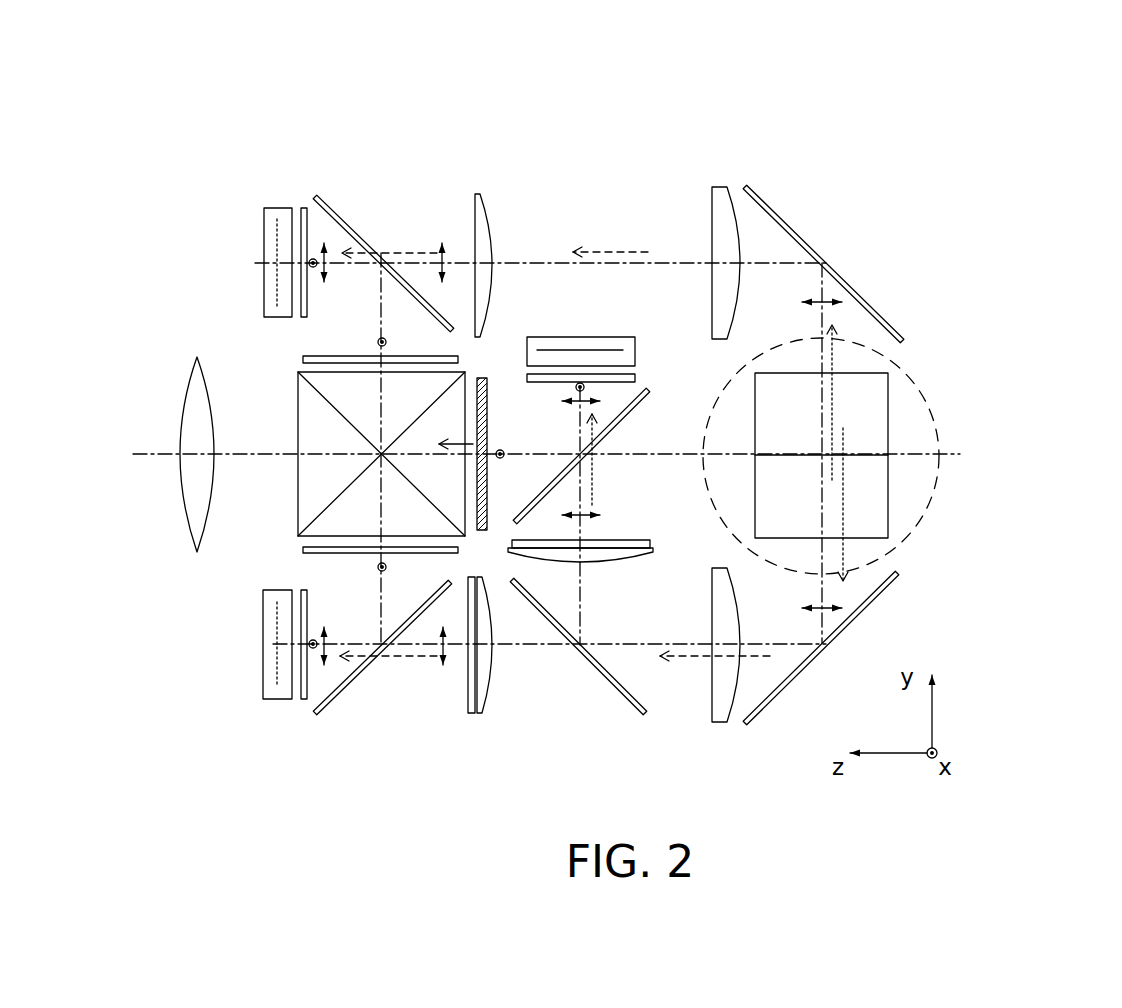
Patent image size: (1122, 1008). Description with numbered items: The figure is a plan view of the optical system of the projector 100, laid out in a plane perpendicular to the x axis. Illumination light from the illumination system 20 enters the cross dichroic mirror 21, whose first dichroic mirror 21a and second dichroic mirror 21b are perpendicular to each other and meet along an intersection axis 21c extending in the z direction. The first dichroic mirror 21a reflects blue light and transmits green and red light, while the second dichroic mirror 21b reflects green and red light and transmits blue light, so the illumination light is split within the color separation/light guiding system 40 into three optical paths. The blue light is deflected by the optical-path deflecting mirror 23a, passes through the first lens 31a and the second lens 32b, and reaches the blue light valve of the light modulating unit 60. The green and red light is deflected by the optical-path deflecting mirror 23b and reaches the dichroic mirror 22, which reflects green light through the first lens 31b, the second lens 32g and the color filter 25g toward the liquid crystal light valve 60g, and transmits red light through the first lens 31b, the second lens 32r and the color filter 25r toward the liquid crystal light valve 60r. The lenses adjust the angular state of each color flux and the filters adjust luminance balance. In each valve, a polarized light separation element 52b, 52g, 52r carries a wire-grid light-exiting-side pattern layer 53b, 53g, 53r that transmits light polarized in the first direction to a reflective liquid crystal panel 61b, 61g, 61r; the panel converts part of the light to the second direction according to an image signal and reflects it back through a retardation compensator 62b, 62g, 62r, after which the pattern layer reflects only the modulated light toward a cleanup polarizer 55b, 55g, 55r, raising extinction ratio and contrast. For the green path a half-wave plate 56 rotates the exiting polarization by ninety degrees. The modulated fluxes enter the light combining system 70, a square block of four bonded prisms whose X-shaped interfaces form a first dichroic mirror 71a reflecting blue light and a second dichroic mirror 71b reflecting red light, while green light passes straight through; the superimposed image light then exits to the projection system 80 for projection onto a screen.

The projector 100 is at (953, 72).
The illumination system 20 is at (964, 463).
The cross dichroic mirror 21 is at (928, 441).
The first dichroic mirror 21a is at (877, 498).
The second dichroic mirror 21b is at (877, 422).
The intersection axis 21c is at (917, 455).
The dichroic mirror 22 is at (615, 690).
The optical-path deflecting mirror 23a is at (810, 246).
The optical-path deflecting mirror 23b is at (790, 682).
The color filter 25g is at (652, 540).
The color filter 25r is at (470, 715).
The first lens 31a is at (720, 189).
The first lens 31b is at (723, 725).
The second lens 32b is at (482, 193).
The second lens 32g is at (650, 548).
The second lens 32r is at (480, 715).
The color separation/light guiding system 40 is at (913, 226).
The polarized light separation element 52b is at (326, 199).
The polarized light separation element 52g is at (642, 398).
The polarized light separation element 52r is at (343, 692).
The light-exiting-side pattern layer 53b is at (407, 358).
The light-exiting-side pattern layer 53g is at (647, 385).
The light-exiting-side pattern layer 53r is at (317, 707).
The cleanup polarizer 55b is at (413, 353).
The cleanup polarizer 55g is at (483, 515).
The cleanup polarizer 55r is at (427, 552).
The half-wave plate 56 is at (480, 532).
The light modulating unit 60 is at (322, 182).
The liquid crystal light valve 60g is at (650, 373).
The liquid crystal light valve 60r is at (340, 763).
The liquid crystal panel 61b is at (270, 318).
The liquid crystal panel 61g is at (590, 337).
The liquid crystal panel 61r is at (270, 590).
The retardation compensator 62b is at (302, 318).
The retardation compensator 62g is at (548, 373).
The retardation compensator 62r is at (302, 590).
The light combining system 70 is at (291, 442).
The first dichroic mirror 71a is at (403, 432).
The second dichroic mirror 71b is at (395, 473).
The projection system 80 is at (197, 360).